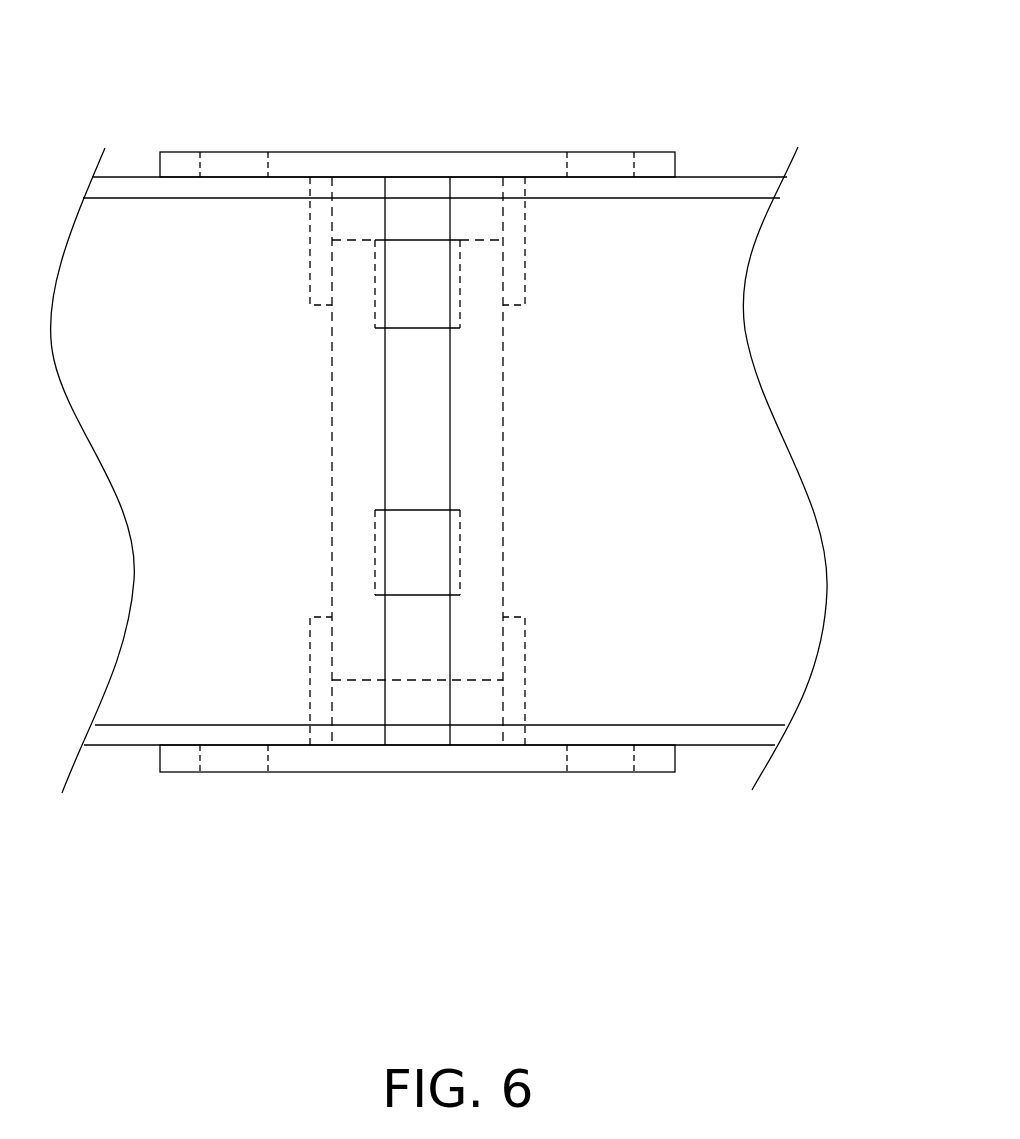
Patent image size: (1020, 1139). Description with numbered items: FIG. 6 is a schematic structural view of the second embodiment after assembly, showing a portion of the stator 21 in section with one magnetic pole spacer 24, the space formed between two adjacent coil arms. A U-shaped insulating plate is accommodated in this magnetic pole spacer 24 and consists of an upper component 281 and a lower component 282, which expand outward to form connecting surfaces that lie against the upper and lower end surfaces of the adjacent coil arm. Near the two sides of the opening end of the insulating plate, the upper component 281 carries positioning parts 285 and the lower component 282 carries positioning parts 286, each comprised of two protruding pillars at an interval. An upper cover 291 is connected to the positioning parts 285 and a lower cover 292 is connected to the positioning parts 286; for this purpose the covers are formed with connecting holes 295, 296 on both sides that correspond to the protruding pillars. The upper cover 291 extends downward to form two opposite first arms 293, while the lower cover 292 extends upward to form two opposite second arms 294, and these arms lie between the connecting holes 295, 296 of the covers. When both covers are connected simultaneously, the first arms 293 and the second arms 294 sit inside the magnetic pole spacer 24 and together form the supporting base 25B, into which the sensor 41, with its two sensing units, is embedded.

The stator 21 is at (792, 648).
The magnetic pole spacer 24 is at (415, 728).
The supporting base 25B is at (532, 302).
The sensor 41 is at (331, 390).
The upper component 281 is at (750, 188).
The lower component 282 is at (715, 745).
The positioning part 285 is at (600, 163).
The positioning part 286 is at (243, 760).
The upper cover 291 is at (480, 151).
The lower cover 292 is at (475, 772).
The first arm 293 is at (310, 228).
The second arm 294 is at (310, 663).
The connecting hole 295 is at (622, 165).
The connecting hole 296 is at (200, 752).